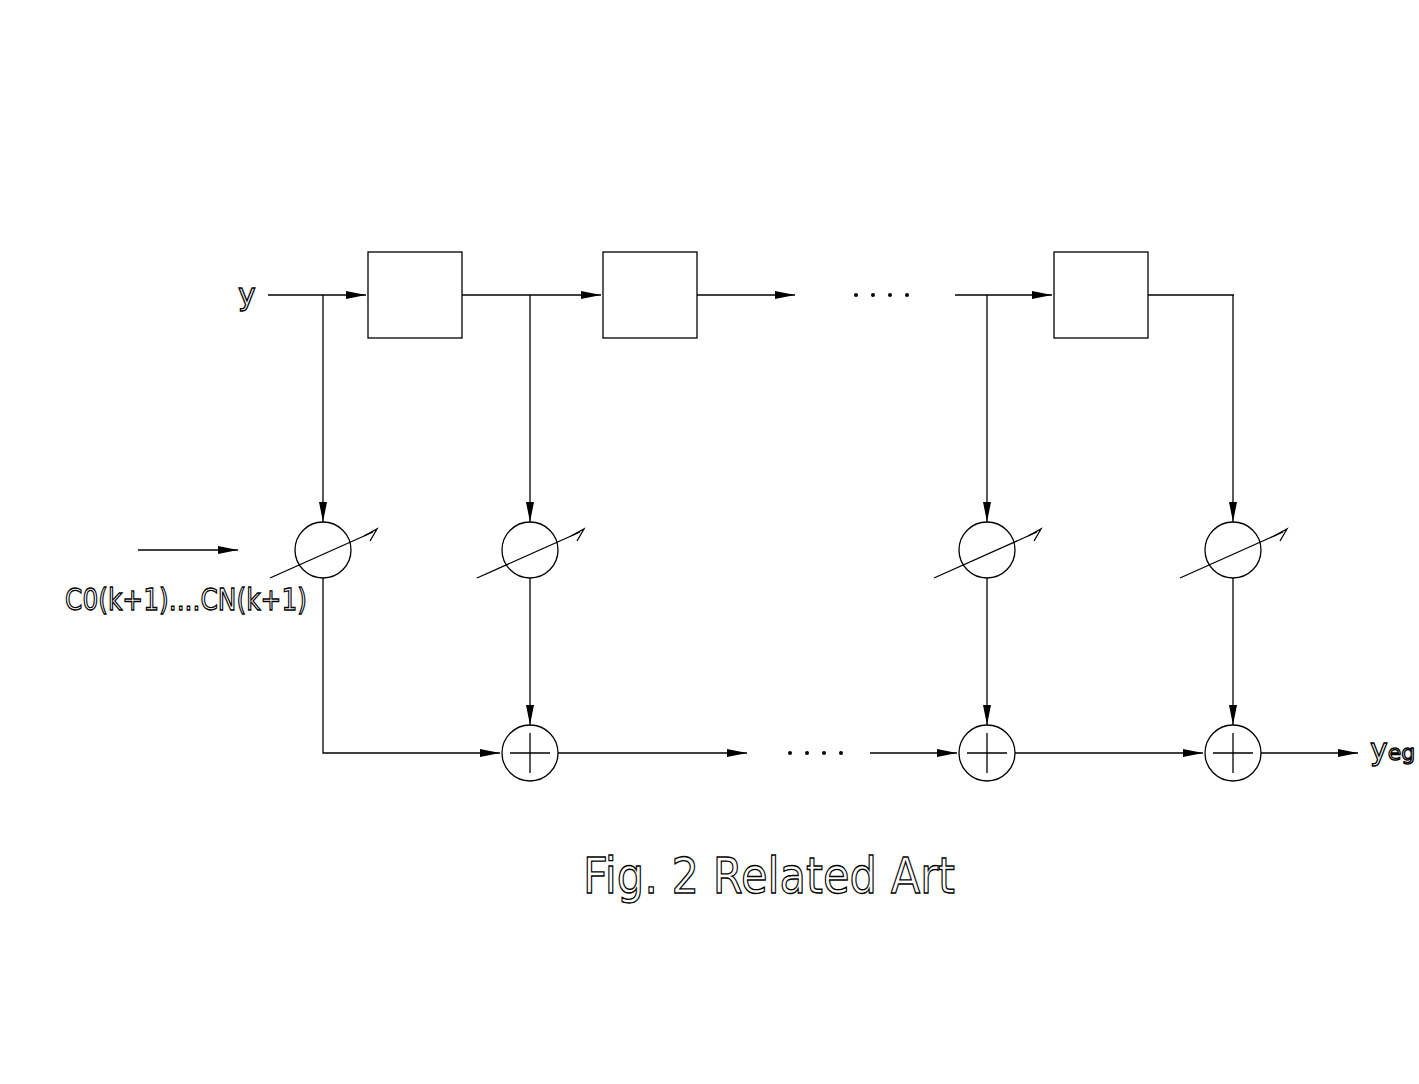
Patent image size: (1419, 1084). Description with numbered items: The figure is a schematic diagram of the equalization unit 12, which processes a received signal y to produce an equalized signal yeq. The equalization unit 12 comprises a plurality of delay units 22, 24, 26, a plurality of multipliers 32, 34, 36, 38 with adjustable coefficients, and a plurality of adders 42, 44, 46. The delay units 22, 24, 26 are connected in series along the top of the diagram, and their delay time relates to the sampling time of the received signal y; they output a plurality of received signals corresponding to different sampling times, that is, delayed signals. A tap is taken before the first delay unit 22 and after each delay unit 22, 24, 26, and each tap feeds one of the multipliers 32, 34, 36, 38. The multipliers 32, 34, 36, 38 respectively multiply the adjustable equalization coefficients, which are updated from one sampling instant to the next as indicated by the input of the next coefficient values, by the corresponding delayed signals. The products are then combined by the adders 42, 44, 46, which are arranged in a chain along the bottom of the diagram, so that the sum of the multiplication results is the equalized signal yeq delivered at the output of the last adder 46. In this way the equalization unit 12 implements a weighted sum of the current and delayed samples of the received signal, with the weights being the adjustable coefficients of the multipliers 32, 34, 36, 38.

The equalization unit 12 is at (1290, 198).
The delay unit 22 is at (400, 252).
The delay unit 24 is at (635, 252).
The delay unit 26 is at (1086, 252).
The multiplier 32 is at (337, 527).
The multiplier 34 is at (544, 527).
The multiplier 36 is at (1000, 527).
The multiplier 38 is at (1247, 527).
The adder 42 is at (535, 780).
The adder 44 is at (992, 780).
The adder 46 is at (1238, 780).